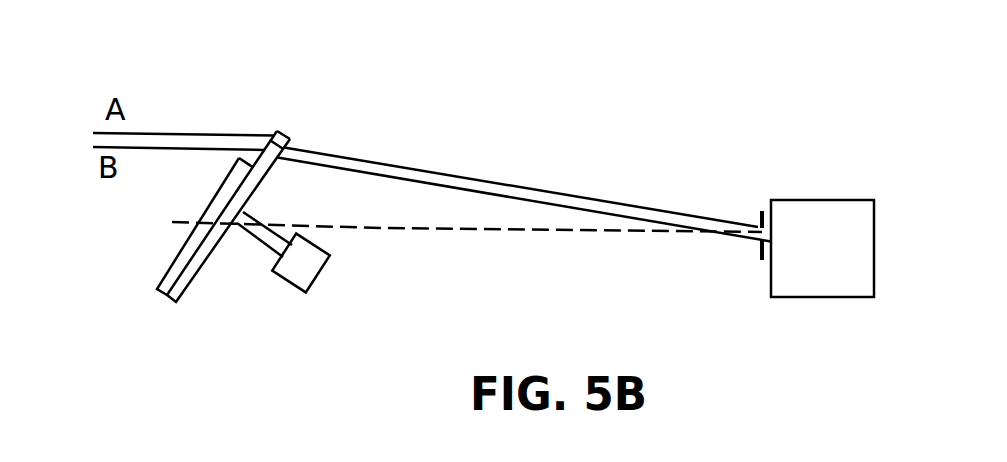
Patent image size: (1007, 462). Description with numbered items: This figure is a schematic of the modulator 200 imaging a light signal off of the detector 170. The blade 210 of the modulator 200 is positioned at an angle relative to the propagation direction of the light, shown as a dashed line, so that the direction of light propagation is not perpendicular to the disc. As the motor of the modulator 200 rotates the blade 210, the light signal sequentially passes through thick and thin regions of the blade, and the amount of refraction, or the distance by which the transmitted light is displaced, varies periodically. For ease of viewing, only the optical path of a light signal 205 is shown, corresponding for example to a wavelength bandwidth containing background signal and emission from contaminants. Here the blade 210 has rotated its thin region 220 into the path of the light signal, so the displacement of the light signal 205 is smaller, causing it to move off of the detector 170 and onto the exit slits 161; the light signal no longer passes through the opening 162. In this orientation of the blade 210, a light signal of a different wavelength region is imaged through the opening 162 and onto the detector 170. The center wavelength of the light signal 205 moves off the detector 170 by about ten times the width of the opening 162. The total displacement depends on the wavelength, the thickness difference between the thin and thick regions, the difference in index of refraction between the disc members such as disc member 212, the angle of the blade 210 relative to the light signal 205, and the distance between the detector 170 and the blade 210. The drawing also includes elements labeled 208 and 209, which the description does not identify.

The modulator 200 is at (267, 311).
The light signal 205 is at (697, 215).
The actuator 208 is at (310, 264).
The actuator rod 209 is at (262, 236).
The blade 210 is at (167, 290).
The disc member 212 is at (176, 262).
The thin region 220 is at (292, 140).
The exit slits 161 is at (759, 211).
The opening 162 is at (772, 241).
The detector 170 is at (853, 220).